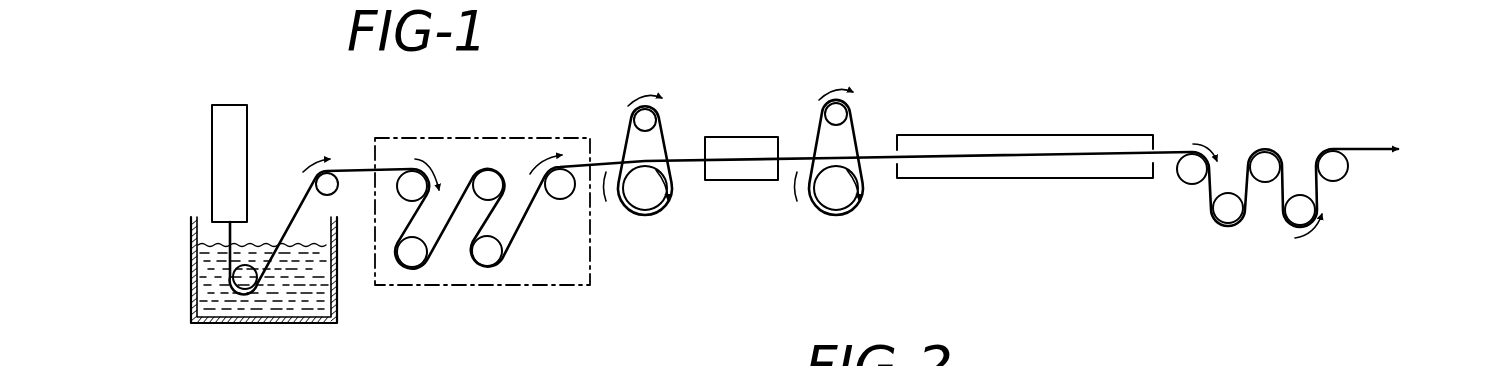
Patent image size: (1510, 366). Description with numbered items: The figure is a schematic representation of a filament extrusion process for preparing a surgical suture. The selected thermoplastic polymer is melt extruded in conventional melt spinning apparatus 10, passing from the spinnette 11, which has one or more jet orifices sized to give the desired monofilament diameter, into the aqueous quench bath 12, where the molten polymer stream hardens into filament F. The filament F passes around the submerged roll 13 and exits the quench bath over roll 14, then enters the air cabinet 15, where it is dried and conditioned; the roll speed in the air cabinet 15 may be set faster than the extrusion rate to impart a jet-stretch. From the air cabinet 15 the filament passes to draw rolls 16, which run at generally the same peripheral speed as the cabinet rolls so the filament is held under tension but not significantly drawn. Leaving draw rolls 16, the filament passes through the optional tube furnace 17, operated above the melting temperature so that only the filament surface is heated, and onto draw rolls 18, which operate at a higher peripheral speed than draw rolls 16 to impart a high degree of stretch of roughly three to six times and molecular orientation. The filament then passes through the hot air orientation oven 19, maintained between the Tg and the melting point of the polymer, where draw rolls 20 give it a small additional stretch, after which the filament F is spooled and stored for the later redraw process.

The melt spinning apparatus 10 is at (212, 140).
The spinnette 11 is at (228, 224).
The aqueous quench bath 12 is at (292, 292).
The submerged roll 13 is at (243, 279).
The roll 14 is at (334, 188).
The air cabinet 15 is at (460, 286).
The draw rolls 16 is at (676, 123).
The tube furnace 17 is at (737, 182).
The draw rolls 18 is at (874, 122).
The hot air orientation oven 19 is at (1022, 180).
The draw rolls 20 is at (1209, 233).
The filament F is at (298, 207).